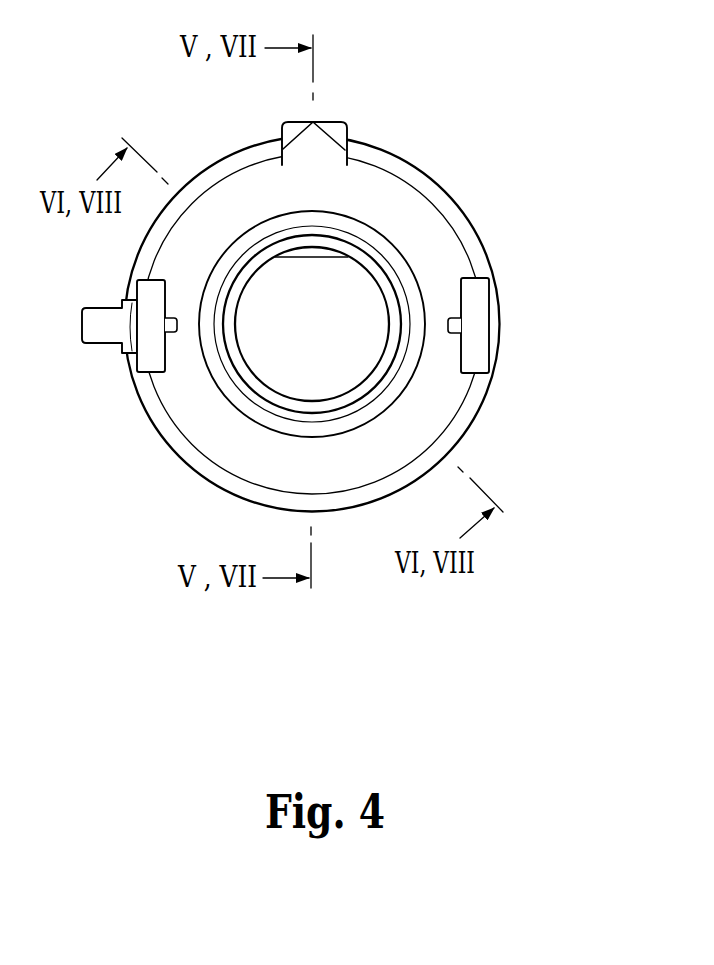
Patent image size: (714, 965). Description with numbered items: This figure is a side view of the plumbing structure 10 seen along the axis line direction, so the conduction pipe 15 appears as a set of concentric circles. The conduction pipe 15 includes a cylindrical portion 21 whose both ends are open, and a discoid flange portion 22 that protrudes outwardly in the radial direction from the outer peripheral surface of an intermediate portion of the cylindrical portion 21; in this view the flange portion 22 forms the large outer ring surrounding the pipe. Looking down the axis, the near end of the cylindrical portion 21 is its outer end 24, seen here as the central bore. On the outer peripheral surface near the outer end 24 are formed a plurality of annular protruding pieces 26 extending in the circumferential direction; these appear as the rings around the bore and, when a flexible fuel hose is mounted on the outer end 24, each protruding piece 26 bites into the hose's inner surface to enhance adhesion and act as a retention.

The plumbing structure 10 is at (350, 297).
The conduction pipe 15 is at (495, 250).
The cylindrical portion 21 is at (412, 397).
The flange portion 22 is at (415, 164).
The outer end 24 is at (385, 280).
The annular protruding pieces 26 is at (413, 365).